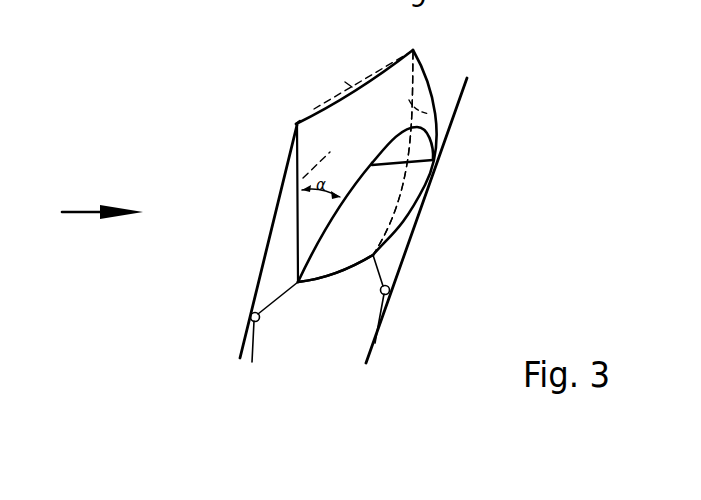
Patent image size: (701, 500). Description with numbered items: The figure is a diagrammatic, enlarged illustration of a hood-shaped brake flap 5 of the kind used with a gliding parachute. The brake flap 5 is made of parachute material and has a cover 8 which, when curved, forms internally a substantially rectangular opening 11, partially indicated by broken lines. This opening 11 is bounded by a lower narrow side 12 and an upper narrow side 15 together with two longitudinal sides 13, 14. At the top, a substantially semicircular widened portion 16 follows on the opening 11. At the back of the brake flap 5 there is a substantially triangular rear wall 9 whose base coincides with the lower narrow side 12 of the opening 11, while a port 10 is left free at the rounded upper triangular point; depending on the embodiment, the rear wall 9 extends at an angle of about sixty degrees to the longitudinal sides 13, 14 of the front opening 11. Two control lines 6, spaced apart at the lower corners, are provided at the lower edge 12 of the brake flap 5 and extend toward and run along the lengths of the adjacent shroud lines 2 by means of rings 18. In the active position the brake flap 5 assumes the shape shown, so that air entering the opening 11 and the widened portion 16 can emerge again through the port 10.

The shroud lines 2 is at (302, 252).
The brake flap 5 is at (88, 215).
The control lines 6 is at (256, 349).
The cover 8 is at (324, 127).
The rear wall 9 is at (380, 203).
The port 10 is at (435, 160).
The opening 11 is at (324, 166).
The lower narrow side 12 is at (336, 279).
The longitudinal side 13 is at (323, 205).
The longitudinal side 14 is at (433, 117).
The upper narrow side 15 is at (316, 108).
The widened portion 16 is at (348, 84).
The rings 18 is at (250, 317).